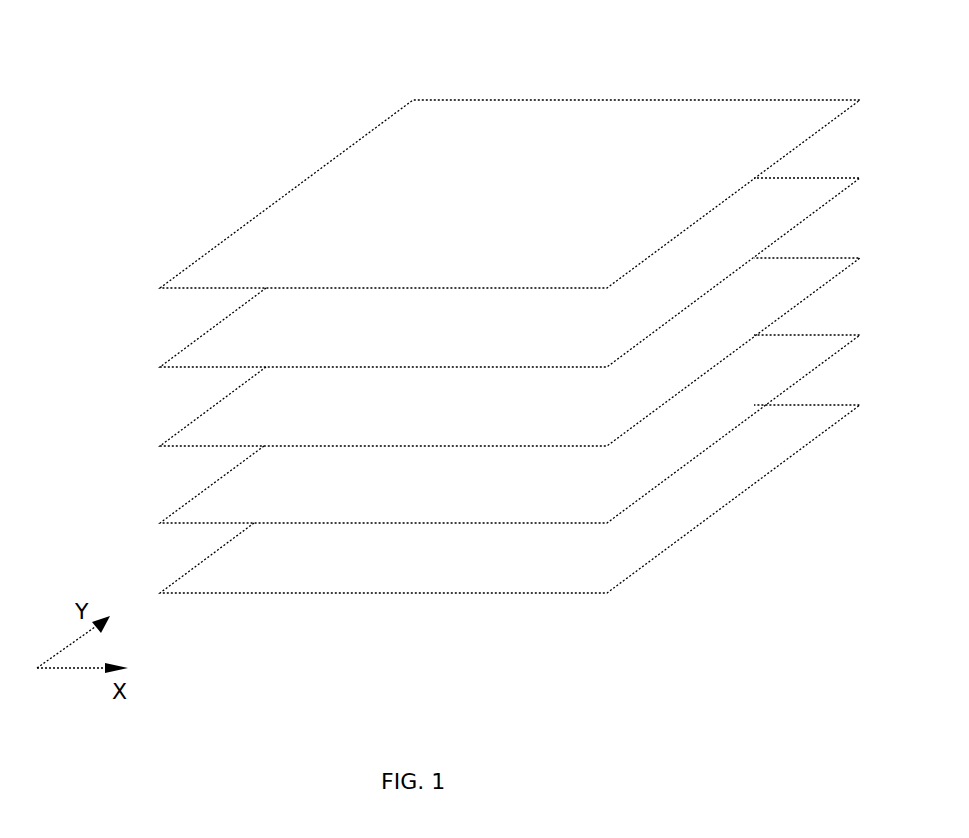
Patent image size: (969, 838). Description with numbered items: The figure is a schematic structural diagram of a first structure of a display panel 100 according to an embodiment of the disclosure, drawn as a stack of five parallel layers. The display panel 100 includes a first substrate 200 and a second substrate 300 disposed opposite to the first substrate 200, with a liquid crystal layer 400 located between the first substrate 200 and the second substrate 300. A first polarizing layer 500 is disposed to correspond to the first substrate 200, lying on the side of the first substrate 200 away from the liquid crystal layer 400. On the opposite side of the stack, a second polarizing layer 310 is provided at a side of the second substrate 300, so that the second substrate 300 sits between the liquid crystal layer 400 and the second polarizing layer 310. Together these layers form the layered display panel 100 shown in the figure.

The display panel 100 is at (132, 48).
The second polarizing layer 310 is at (285, 195).
The second substrate 300 is at (197, 338).
The liquid crystal layer 400 is at (200, 415).
The first substrate 200 is at (207, 490).
The first polarizing layer 500 is at (200, 566).